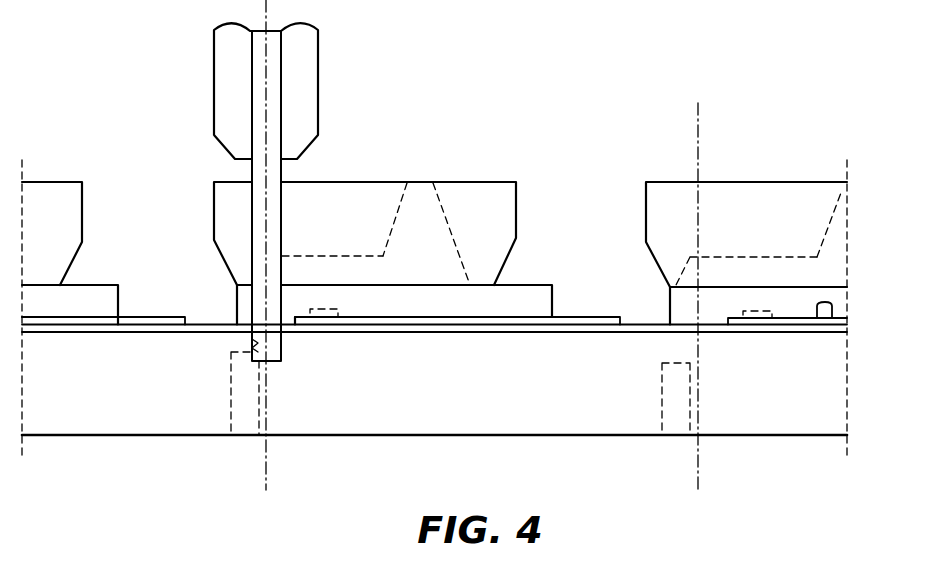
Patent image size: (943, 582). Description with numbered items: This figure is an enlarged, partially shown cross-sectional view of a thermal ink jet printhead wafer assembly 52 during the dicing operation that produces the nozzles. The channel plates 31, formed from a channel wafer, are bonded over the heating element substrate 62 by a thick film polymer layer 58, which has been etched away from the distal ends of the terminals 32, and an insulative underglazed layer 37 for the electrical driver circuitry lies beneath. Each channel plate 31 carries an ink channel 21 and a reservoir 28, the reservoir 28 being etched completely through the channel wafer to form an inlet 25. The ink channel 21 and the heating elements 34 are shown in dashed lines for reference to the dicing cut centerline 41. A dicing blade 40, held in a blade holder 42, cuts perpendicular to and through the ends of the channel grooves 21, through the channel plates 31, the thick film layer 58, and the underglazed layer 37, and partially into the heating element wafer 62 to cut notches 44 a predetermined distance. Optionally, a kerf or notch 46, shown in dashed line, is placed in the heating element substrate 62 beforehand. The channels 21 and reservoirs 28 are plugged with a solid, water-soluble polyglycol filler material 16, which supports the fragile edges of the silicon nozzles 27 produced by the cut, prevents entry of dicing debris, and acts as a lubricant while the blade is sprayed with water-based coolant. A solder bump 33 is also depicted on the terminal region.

The filler material 16 is at (837, 218).
The ink channel 21 is at (311, 255).
The inlet 25 is at (427, 198).
The nozzle 27 is at (280, 308).
The reservoir 28 is at (457, 250).
The channel plate 31 is at (50, 181).
The terminal 32 is at (142, 316).
The solder bump 33 is at (817, 318).
The heating element 34 is at (337, 308).
The insulative underglazed layer 37 is at (470, 333).
The dicing blade 40 is at (248, 174).
The dicing cut centerline 41 is at (265, 448).
The blade holder 42 is at (318, 65).
The notch 44 is at (252, 342).
The kerf or notch 46 is at (228, 402).
The module assembly 52 is at (415, 95).
The thick film polymer layer 58 is at (92, 285).
The heating element substrate 62 is at (425, 437).